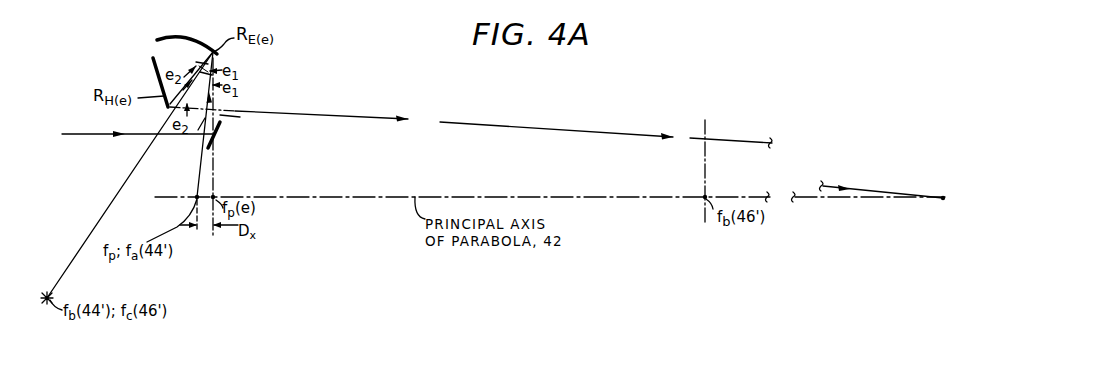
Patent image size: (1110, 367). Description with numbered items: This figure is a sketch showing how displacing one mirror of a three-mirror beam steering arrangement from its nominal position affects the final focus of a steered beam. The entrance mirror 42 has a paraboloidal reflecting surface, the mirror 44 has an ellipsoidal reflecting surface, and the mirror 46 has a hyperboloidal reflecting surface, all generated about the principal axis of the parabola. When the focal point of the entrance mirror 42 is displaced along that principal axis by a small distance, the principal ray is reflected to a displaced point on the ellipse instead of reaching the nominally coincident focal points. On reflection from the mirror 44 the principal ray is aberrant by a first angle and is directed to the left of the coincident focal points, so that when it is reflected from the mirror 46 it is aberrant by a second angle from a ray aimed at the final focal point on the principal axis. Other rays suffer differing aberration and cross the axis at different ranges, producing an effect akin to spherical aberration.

The entrance mirror 42 is at (190, 139).
The mirror 44 is at (185, 38).
The mirror 46 is at (152, 72).